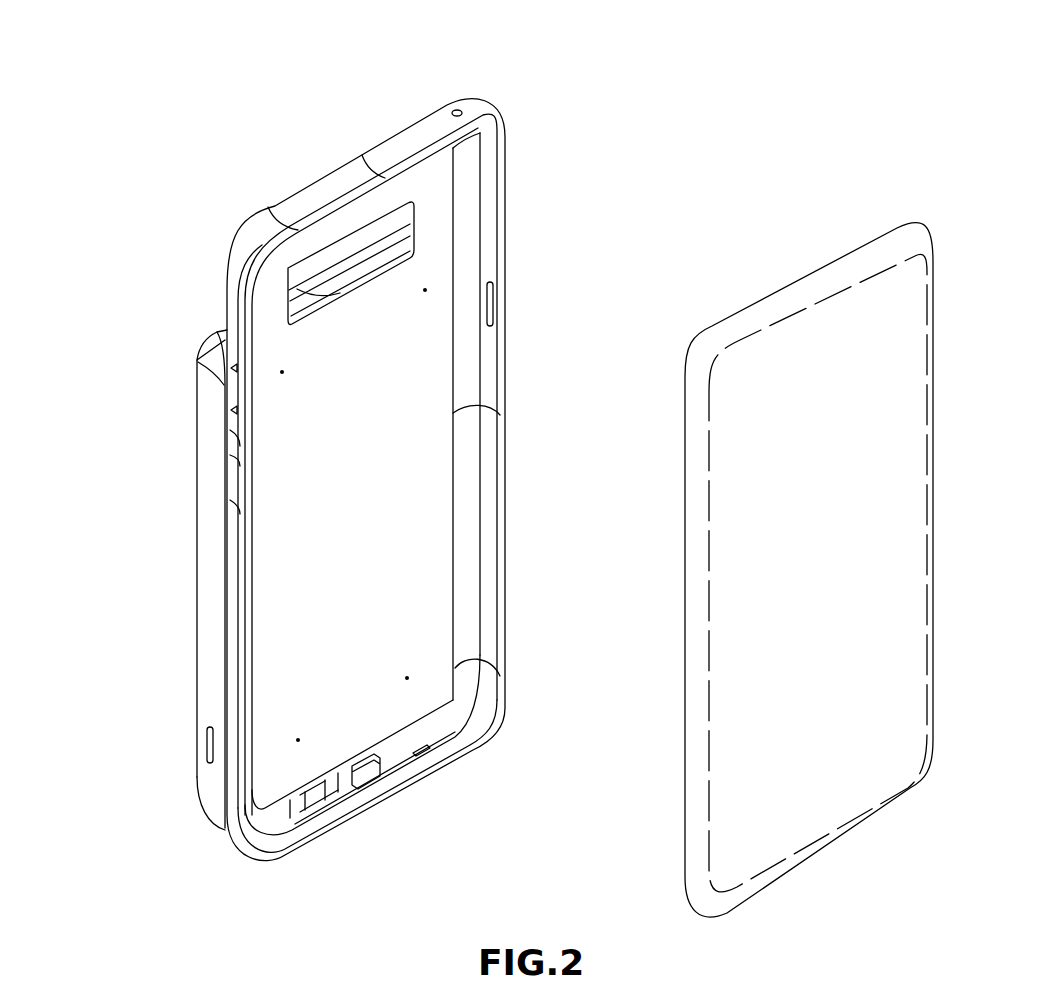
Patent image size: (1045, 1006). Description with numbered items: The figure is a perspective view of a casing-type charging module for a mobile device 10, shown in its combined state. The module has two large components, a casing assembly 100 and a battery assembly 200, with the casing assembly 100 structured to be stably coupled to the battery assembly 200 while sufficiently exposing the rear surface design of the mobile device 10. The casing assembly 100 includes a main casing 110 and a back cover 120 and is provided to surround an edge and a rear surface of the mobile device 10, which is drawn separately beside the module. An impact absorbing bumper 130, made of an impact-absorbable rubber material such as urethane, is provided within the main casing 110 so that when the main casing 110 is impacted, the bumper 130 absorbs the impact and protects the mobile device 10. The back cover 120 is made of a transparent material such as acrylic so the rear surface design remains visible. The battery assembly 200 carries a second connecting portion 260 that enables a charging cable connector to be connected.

The mobile device 10 is at (876, 228).
The casing assembly 100 is at (380, 118).
The main casing 110 is at (332, 190).
The back cover 120 is at (430, 358).
The impact absorbing bumper 130 is at (500, 184).
The battery assembly 200 is at (183, 541).
The second connecting portion 260 is at (205, 740).